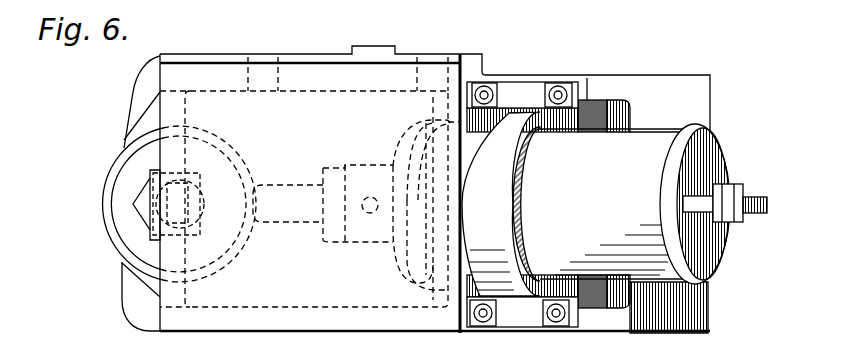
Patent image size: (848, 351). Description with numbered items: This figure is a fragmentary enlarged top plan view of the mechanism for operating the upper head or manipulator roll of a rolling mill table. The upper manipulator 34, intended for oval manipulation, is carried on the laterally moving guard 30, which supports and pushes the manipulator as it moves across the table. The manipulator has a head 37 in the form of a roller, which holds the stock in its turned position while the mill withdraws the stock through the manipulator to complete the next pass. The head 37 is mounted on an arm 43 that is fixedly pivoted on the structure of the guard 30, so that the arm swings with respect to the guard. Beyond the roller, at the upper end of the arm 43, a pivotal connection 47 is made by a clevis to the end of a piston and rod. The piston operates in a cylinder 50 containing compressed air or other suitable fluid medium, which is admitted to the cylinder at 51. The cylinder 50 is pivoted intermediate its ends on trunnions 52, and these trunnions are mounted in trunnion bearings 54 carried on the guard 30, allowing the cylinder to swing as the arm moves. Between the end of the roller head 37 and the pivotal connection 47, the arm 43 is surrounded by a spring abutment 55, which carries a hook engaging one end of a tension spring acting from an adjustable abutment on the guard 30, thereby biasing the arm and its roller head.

The guard 30 is at (160, 297).
The upper manipulator 34 is at (140, 93).
The head 37 is at (100, 194).
The spring abutment 55 is at (133, 172).
The arm 43 is at (160, 208).
The pivotal connection 47 is at (153, 210).
The cylinder 50 is at (596, 204).
The fluid admission 51 is at (727, 188).
The trunnions 52 is at (522, 73).
The trunnion bearings 54 is at (500, 93).